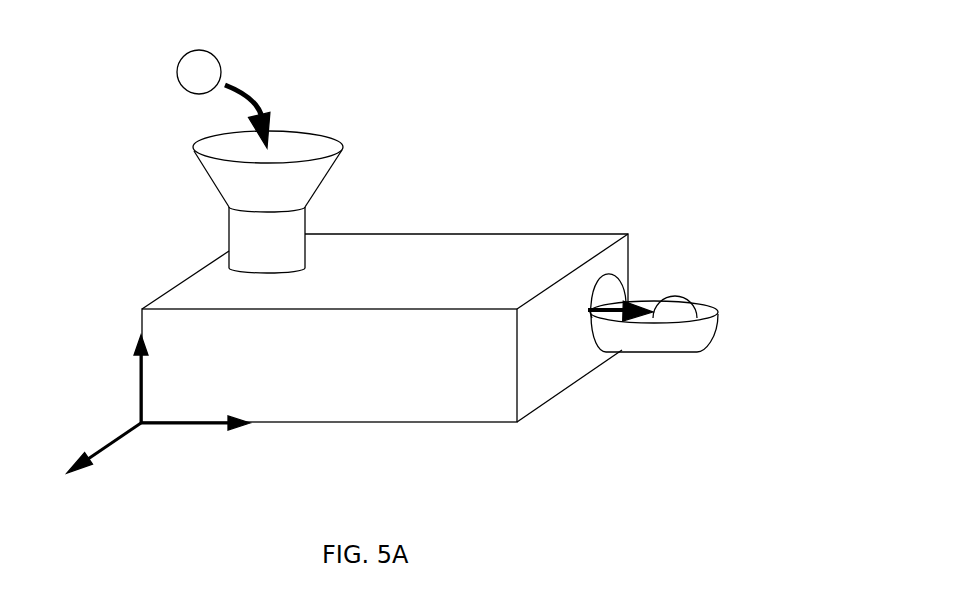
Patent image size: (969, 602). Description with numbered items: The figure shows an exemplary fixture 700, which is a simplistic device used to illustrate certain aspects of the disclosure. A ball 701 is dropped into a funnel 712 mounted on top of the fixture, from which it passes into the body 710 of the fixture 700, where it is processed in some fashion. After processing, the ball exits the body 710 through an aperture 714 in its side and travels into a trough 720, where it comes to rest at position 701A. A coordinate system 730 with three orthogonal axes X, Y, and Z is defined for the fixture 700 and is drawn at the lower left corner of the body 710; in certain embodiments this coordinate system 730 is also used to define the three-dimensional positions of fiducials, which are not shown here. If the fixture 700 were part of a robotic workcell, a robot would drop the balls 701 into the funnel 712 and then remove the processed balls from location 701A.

The fixture 700 is at (546, 38).
The ball 701 is at (213, 87).
The position 701A is at (677, 276).
The body 710 is at (440, 224).
The funnel 712 is at (319, 124).
The aperture 714 is at (622, 268).
The trough 720 is at (711, 287).
The coordinate system 730 is at (96, 377).